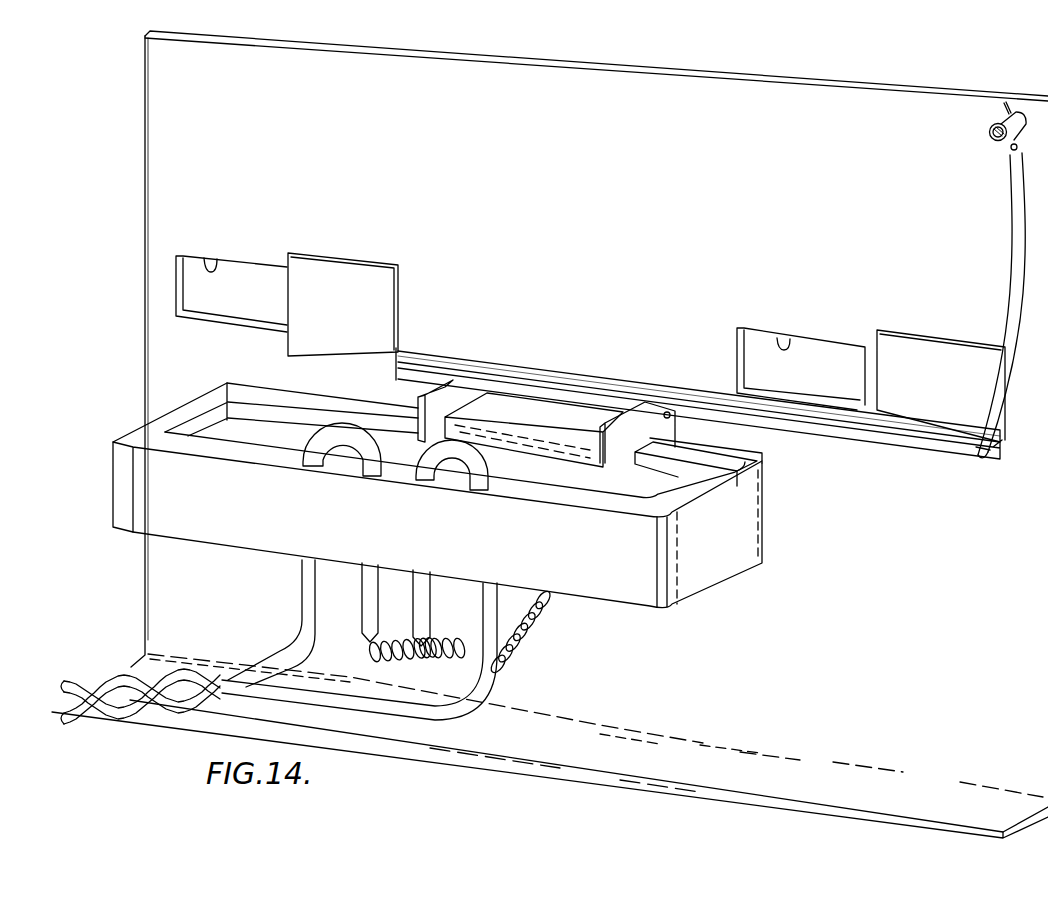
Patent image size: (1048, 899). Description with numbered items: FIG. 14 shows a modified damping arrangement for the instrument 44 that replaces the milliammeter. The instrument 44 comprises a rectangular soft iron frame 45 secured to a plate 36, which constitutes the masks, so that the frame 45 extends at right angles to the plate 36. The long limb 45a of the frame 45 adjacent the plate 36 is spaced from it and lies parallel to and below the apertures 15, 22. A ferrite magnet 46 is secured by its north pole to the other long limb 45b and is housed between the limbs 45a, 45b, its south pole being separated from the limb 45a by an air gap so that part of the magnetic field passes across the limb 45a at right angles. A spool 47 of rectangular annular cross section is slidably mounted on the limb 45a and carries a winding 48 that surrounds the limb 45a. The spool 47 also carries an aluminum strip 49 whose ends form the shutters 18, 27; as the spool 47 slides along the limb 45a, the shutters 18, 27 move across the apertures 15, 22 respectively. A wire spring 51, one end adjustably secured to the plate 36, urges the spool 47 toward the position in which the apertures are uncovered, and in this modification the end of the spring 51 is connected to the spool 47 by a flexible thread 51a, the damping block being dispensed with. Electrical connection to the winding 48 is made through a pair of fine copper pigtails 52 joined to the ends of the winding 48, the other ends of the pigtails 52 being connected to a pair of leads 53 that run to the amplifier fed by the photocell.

The plate 36 is at (602, 226).
The aperture 22 is at (211, 262).
The shutter 27 is at (363, 275).
The instrument 44 is at (752, 447).
The aluminum strip 49 is at (600, 380).
The aperture 15 is at (783, 340).
The shutter 18 is at (907, 353).
The wire spring 51 is at (1010, 148).
The flexible thread 51a is at (948, 450).
The soft iron frame 45 is at (437, 497).
The long limb 45a is at (375, 351).
The long limb 45b is at (523, 497).
The ferrite magnet 46 is at (655, 485).
The winding 48 is at (513, 405).
The spool 47 is at (648, 423).
The pigtails 52 is at (468, 640).
The leads 53 is at (302, 582).